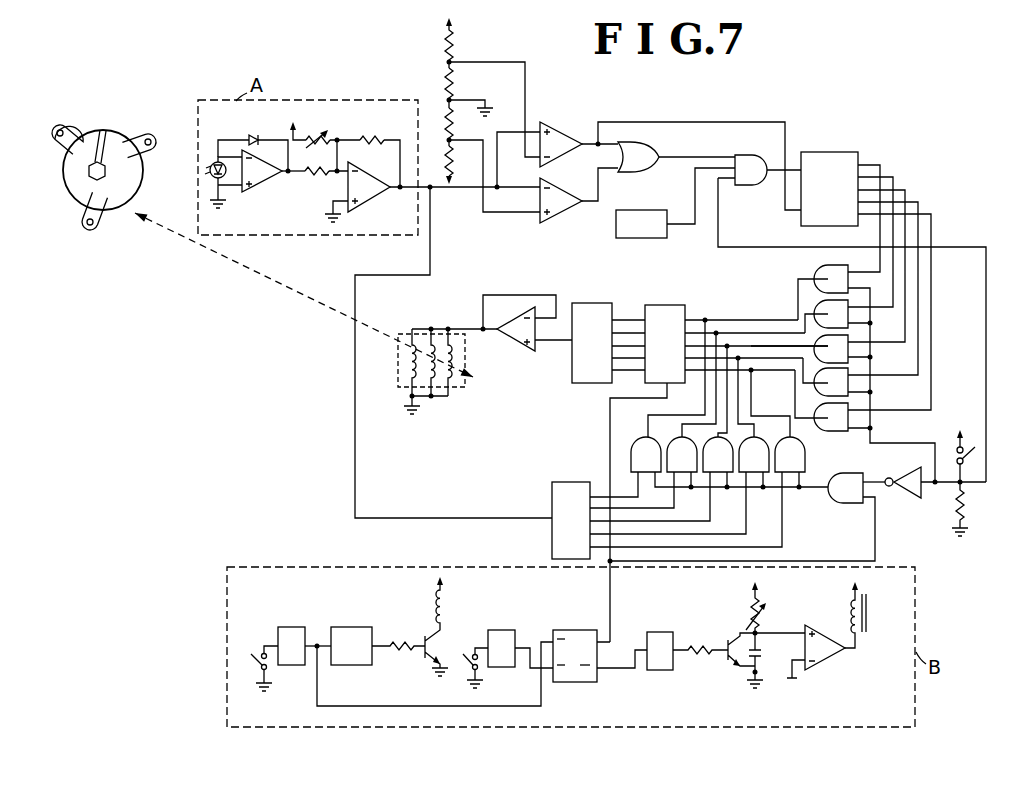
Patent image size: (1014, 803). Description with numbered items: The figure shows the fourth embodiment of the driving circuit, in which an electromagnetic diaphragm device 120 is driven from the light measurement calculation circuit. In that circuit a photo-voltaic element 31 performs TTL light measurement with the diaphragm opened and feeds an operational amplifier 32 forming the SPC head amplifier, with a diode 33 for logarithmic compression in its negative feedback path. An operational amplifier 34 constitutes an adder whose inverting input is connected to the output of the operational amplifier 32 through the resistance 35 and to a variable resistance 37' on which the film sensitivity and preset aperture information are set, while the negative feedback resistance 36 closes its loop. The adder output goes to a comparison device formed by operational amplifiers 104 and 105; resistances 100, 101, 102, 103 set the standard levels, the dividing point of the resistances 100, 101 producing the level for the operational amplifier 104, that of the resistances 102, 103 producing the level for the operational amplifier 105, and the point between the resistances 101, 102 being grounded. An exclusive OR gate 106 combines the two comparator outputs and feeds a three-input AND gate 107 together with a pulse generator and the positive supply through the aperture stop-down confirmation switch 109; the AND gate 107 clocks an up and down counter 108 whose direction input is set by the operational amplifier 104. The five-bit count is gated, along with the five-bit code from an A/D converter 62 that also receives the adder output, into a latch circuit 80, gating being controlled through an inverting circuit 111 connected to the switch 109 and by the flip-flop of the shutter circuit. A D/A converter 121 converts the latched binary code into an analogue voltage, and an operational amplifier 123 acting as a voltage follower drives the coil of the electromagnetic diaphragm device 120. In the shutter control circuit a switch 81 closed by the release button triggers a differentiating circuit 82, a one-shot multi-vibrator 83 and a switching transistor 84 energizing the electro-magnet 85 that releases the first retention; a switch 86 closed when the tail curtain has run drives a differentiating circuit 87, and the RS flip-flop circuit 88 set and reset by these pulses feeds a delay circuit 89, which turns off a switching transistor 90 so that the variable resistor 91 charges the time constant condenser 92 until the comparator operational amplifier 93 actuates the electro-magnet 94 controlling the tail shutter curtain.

The electromagnetic diaphragm device 120 is at (76, 196).
The photo-voltaic element 31 is at (212, 185).
The operational amplifier 32 is at (273, 171).
The diode 33 is at (257, 134).
The operational amplifier 34 is at (412, 192).
The resistance 35 is at (318, 176).
The negative feedback resistance 36 is at (369, 139).
The variable resistance 37' is at (318, 137).
The resistance 100 is at (455, 45).
The resistance 101 is at (455, 85).
The resistance 102 is at (455, 123).
The resistance 103 is at (455, 161).
The operational amplifier 104 is at (658, 166).
The operational amplifier 105 is at (560, 201).
The exclusive OR gate 106 is at (676, 157).
The AND gate 107 is at (852, 318).
The up and down counter 108 is at (836, 153).
The aperture stop-down confirmation switch 109 is at (974, 456).
The inverting circuit 111 is at (905, 495).
The D/A converter 121 is at (590, 304).
The operational amplifier 123 is at (484, 323).
The latch circuit 80 is at (663, 305).
The A/D converter 62 is at (552, 546).
The switch 81 is at (256, 662).
The differentiating circuit 82 is at (304, 646).
The one-shot multi-vibrator 83 is at (378, 646).
The switching transistor 84 is at (422, 660).
The electro-magnet 85 is at (449, 610).
The switch 86 is at (468, 668).
The differentiating circuit 87 is at (520, 649).
The RS flip-flop circuit 88 is at (565, 682).
The delay circuit 89 is at (687, 651).
The switching transistor 90 is at (726, 658).
The variable resistor 91 is at (763, 612).
The time constant condenser 92 is at (763, 653).
The operational amplifier 93 is at (821, 659).
The electro-magnet 94 is at (869, 612).